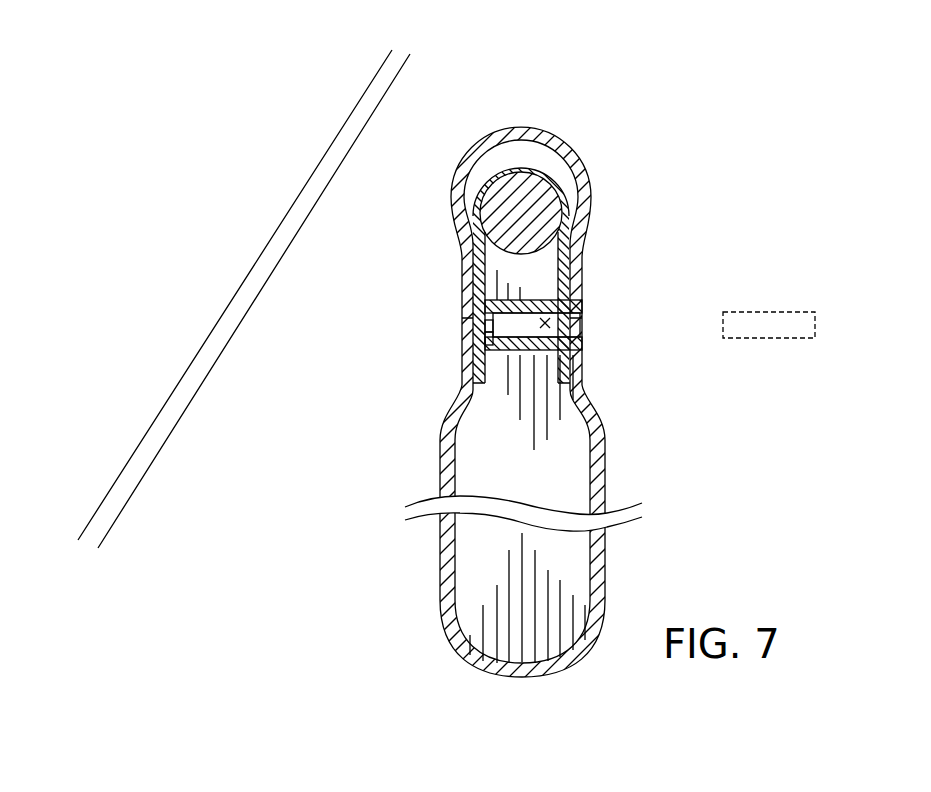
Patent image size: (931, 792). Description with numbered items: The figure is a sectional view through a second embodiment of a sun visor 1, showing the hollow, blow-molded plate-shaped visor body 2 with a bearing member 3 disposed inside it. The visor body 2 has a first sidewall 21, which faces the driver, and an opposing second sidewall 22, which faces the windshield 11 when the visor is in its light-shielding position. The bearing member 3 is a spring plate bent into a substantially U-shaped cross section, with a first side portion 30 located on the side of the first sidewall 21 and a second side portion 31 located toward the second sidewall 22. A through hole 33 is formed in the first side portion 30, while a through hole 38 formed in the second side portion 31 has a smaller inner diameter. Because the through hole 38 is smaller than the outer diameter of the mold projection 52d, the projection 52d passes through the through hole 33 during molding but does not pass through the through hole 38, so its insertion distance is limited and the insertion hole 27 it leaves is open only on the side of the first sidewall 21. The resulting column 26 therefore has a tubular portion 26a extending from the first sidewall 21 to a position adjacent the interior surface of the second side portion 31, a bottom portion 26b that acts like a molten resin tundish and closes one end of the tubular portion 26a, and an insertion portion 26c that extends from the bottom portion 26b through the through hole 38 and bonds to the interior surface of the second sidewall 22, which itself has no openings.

The sun visor 1 is at (582, 84).
The sun visor body 2 is at (426, 456).
The bearing member 3 is at (492, 156).
The windshield 11 is at (165, 410).
The first sidewall 21 is at (607, 478).
The second sidewall 22 is at (440, 481).
The column 26 is at (525, 278).
The tubular portion 26a is at (583, 336).
The bottom portion 26b is at (480, 345).
The insertion portion 26c is at (474, 330).
The insertion hole 27 is at (560, 321).
The first side portion 30 is at (583, 245).
The second side portion 31 is at (462, 256).
The through hole 33 is at (586, 302).
The through hole 38 is at (464, 318).
The projection 52d is at (793, 334).